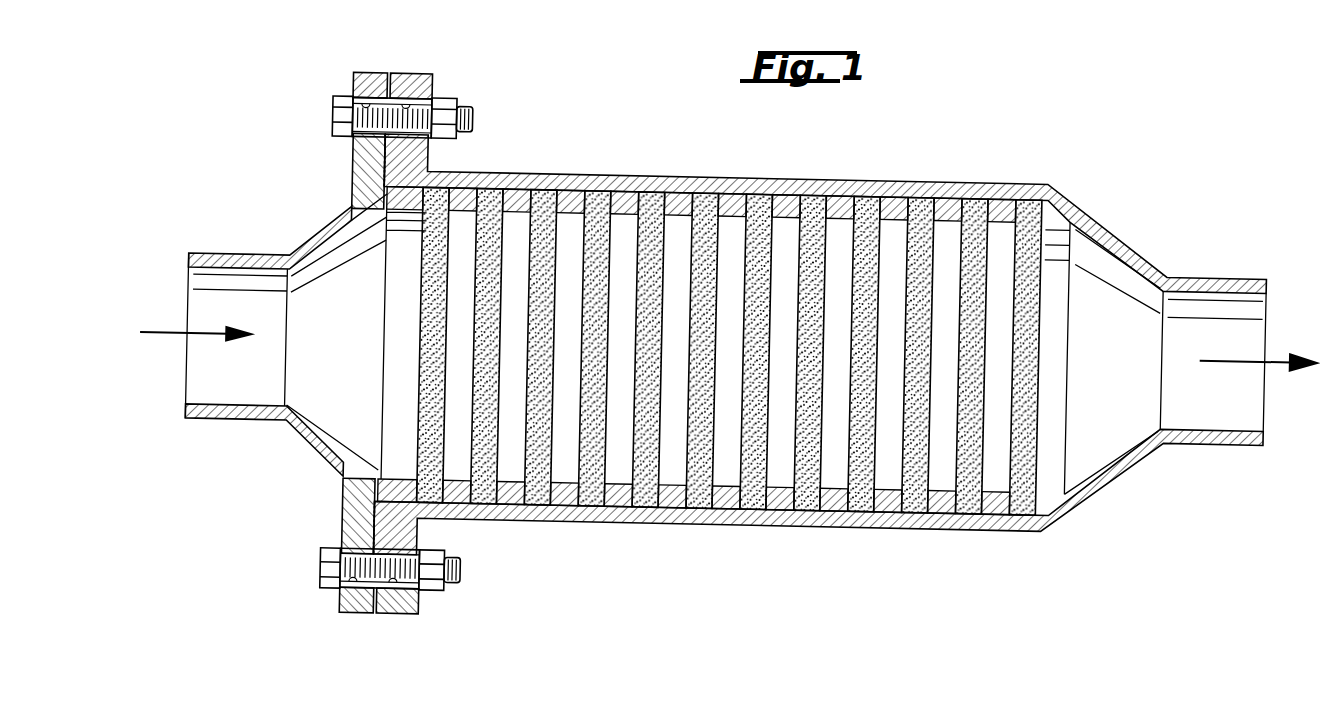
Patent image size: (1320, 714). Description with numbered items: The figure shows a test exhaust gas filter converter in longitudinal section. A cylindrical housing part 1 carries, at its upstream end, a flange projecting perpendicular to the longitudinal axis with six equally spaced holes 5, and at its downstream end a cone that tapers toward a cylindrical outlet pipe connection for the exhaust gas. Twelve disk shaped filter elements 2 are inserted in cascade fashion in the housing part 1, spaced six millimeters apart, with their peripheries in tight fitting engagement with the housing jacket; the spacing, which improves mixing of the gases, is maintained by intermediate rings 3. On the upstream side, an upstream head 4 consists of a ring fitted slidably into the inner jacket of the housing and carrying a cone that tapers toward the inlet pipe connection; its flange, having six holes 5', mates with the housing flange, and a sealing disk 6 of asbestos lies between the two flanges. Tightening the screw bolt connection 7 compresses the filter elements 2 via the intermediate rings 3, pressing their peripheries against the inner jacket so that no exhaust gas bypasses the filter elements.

The cylindrical housing part 1 is at (677, 168).
The disk shaped filter elements 2 is at (700, 489).
The intermediate rings 3 is at (570, 492).
The upstream head 4 is at (349, 187).
The holes 5 is at (404, 342).
The holes 5' is at (362, 341).
The sealing disk 6 is at (353, 156).
The screw bolt connection 7 is at (322, 89).